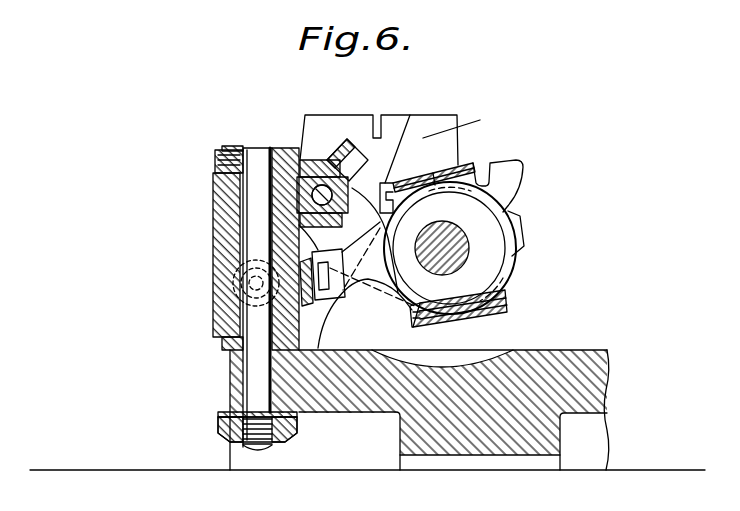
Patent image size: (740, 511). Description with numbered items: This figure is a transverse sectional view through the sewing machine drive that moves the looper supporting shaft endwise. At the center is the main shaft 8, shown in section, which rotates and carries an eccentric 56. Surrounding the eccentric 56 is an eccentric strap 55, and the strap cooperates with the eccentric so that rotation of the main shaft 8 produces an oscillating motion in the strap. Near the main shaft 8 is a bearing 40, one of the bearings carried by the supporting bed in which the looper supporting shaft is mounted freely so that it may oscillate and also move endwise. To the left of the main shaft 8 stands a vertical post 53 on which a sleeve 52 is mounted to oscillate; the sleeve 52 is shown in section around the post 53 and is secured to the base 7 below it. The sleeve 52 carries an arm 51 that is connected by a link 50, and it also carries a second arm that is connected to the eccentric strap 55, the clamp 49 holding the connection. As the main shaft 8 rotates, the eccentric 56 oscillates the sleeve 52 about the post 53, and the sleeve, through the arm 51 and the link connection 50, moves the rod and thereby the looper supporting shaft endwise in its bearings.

The base block 7 is at (545, 370).
The main shaft 8 is at (450, 238).
The bearing 40 is at (411, 228).
The clamp bracket 49 is at (333, 140).
The link 50 is at (323, 168).
The arm 51 is at (391, 149).
The sleeve 52 is at (223, 230).
The vertical post 53 is at (255, 163).
The eccentric strap 55 is at (352, 293).
The eccentric 56 is at (487, 263).